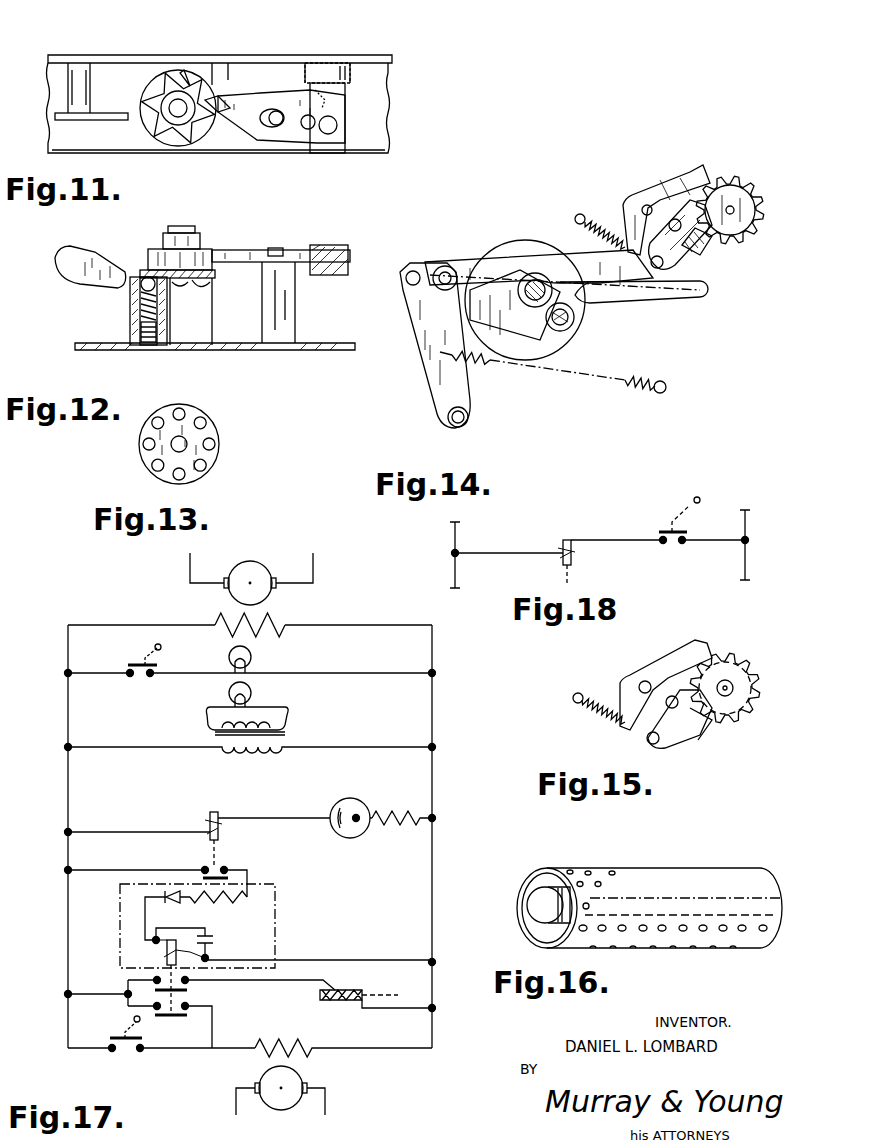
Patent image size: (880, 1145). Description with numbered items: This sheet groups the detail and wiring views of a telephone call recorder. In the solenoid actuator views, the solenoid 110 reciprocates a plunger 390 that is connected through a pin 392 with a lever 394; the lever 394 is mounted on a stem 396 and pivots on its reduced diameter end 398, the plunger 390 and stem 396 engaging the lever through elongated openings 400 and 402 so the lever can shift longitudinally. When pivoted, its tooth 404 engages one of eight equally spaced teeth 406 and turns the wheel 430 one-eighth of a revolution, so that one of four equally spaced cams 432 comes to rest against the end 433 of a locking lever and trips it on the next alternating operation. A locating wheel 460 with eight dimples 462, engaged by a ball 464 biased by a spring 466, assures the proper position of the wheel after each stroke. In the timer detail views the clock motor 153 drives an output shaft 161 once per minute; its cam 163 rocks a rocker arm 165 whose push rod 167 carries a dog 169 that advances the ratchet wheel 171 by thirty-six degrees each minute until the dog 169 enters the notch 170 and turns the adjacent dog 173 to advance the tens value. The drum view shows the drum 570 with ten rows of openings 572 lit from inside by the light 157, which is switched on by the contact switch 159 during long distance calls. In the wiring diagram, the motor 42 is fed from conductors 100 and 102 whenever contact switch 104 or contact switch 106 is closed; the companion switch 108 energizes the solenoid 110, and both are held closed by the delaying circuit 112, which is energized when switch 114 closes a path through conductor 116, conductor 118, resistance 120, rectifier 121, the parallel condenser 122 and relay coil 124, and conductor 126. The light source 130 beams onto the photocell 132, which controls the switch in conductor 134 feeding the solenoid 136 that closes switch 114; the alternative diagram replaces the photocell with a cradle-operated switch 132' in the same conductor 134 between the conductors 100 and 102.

In FIG. 11, the plunger 390 is at (345, 62).
In FIG. 11, the pin 392 is at (337, 126).
In FIG. 11, the lever 394 is at (290, 100).
In FIG. 11, the stem 396 is at (277, 126).
In FIG. 12, the stem 396 is at (283, 250).
In FIG. 12, the reduced diameter end 398 is at (290, 258).
In FIG. 11, the elongated opening 400 is at (315, 145).
In FIG. 11, the elongated opening 402 is at (262, 124).
In FIG. 11, the tooth 404 is at (220, 100).
In FIG. 12, the tooth 404 is at (225, 252).
In FIG. 11, the teeth 406 is at (170, 140).
In FIG. 12, the teeth 406 is at (150, 252).
In FIG. 11, the wheel 430 is at (150, 88).
In FIG. 12, the wheel 430 is at (148, 262).
In FIG. 11, the cams 432 is at (162, 82).
In FIG. 12, the cams 432 is at (200, 240).
In FIG. 11, the end of lever 433 is at (183, 72).
In FIG. 11, the locating wheel 460 is at (178, 130).
In FIG. 12, the locating wheel 460 is at (215, 278).
In FIG. 13, the locating wheel 460 is at (217, 436).
In FIG. 12, the indentations or dimples 462 is at (200, 282).
In FIG. 13, the indentations or dimples 462 is at (180, 407).
In FIG. 12, the ball 464 is at (141, 287).
In FIG. 12, the spring 466 is at (140, 318).
In FIG. 14, the output shaft 161 is at (552, 290).
In FIG. 14, the cam 163 is at (575, 330).
In FIG. 14, the rocker arm 165 is at (425, 378).
In FIG. 14, the push rod 167 is at (590, 255).
In FIG. 14, the dog 169 is at (700, 265).
In FIG. 15, the dog 169 is at (679, 719).
In FIG. 14, the notch 170 is at (712, 240).
In FIG. 14, the ratchet wheel 171 is at (740, 185).
In FIG. 15, the ratchet wheel 171 is at (724, 687).
In FIG. 14, the adjacent dog 173 is at (675, 176).
In FIG. 15, the adjacent dog 173 is at (685, 652).
In FIG. 18, the conductor 100 is at (452, 558).
In FIG. 17, the conductor 100 is at (66, 960).
In FIG. 18, the conductor 102 is at (748, 558).
In FIG. 17, the conductor 102 is at (434, 915).
In FIG. 17, the contact switch 104 is at (128, 1042).
In FIG. 17, the contact switch 106 is at (170, 1017).
In FIG. 17, the companion switch 108 is at (190, 992).
In FIG. 17, the solenoid 110 is at (356, 992).
In FIG. 17, the delaying circuit 112 is at (276, 905).
In FIG. 17, the switch 114 is at (225, 868).
In FIG. 17, the conductor 116 is at (122, 870).
In FIG. 17, the conductor 118 is at (247, 882).
In FIG. 17, the resistance 120 is at (222, 900).
In FIG. 17, the rectifier 121 is at (170, 900).
In FIG. 17, the condenser 122 is at (213, 940).
In FIG. 17, the relay coil 124 is at (165, 954).
In FIG. 17, the conductor 126 is at (305, 960).
In FIG. 17, the light source 130 is at (252, 692).
In FIG. 17, the photocell 132 is at (383, 804).
In FIG. 18, the switch 132' is at (669, 514).
In FIG. 18, the conductor 134 is at (620, 542).
In FIG. 17, the conductor 134 is at (296, 818).
In FIG. 18, the solenoid 136 is at (565, 540).
In FIG. 17, the solenoid 136 is at (218, 815).
In FIG. 17, the clock motor 153 is at (268, 568).
In FIG. 16, the light 157 is at (540, 900).
In FIG. 17, the light 157 is at (252, 658).
In FIG. 17, the contact switch 159 is at (158, 663).
In FIG. 17, the motor 42 is at (300, 1078).
In FIG. 16, the drum 570 is at (680, 868).
In FIG. 16, the openings 572 is at (600, 882).